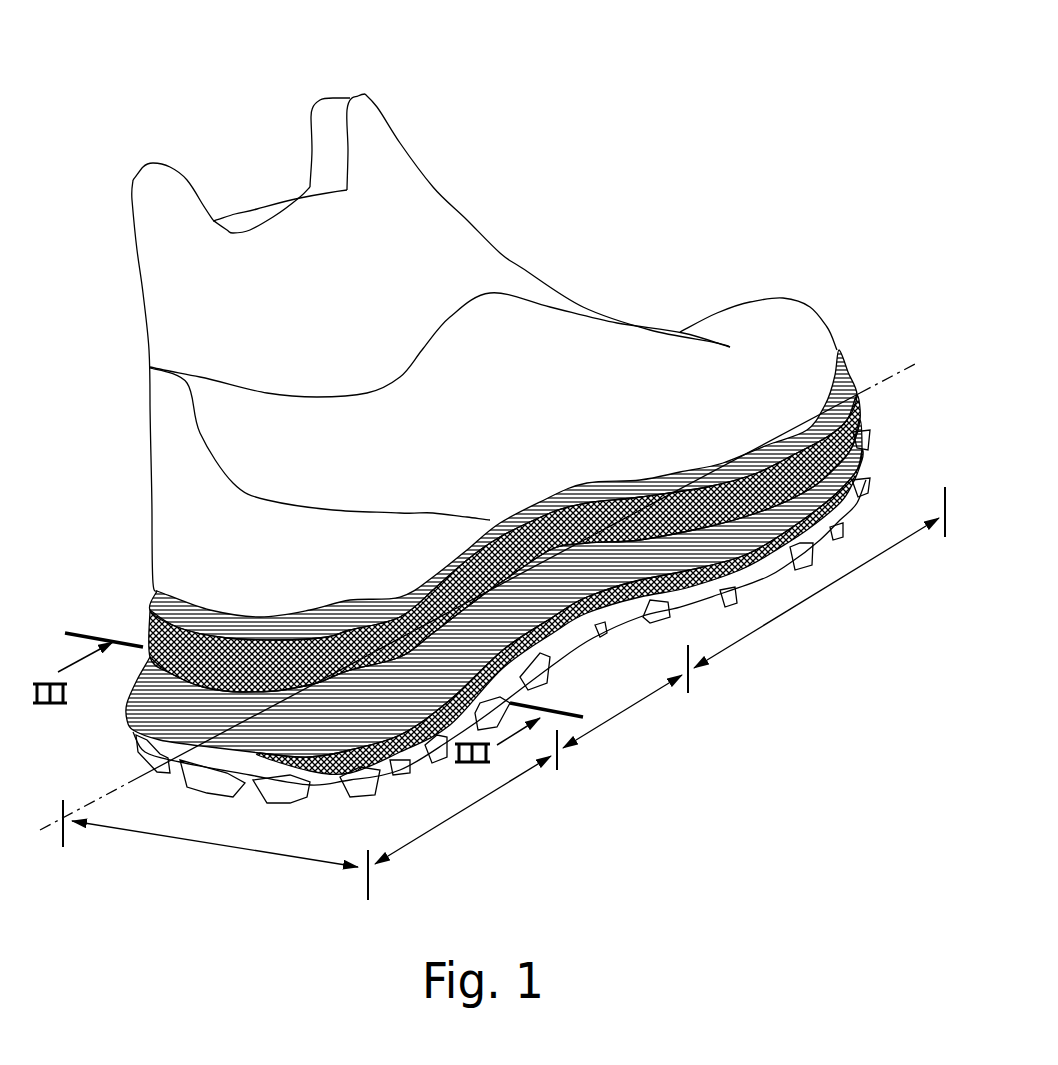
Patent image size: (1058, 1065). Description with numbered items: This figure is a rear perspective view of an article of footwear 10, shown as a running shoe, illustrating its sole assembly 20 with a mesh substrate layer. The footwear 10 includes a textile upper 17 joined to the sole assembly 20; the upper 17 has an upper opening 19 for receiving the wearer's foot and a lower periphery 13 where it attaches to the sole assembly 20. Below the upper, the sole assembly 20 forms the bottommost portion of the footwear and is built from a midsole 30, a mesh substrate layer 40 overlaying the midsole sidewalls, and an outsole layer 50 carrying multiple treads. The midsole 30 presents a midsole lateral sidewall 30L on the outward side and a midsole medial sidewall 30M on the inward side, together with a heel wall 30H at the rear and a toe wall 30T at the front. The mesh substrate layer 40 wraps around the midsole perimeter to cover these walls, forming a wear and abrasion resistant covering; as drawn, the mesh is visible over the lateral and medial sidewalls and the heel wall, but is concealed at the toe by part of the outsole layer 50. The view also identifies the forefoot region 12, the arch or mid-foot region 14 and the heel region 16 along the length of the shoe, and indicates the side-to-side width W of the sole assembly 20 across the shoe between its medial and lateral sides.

The footwear 10 is at (497, 426).
The forefoot region 12 is at (773, 617).
The lower periphery 13 is at (310, 610).
The arch region 14 is at (613, 713).
The heel region 16 is at (487, 787).
The textile upper 17 is at (525, 317).
The upper opening 19 is at (257, 210).
The sole assembly 20 is at (497, 517).
The midsole 30 is at (858, 421).
The toe wall of the midsole 30T is at (843, 350).
The heel wall of the midsole 30H is at (307, 724).
The midsole medial sidewall 30M is at (128, 615).
The midsole lateral sidewall 30L is at (573, 570).
The mesh substrate layer 40 is at (843, 459).
The outsole layer 50 is at (813, 537).
The side-to-side width W is at (208, 850).